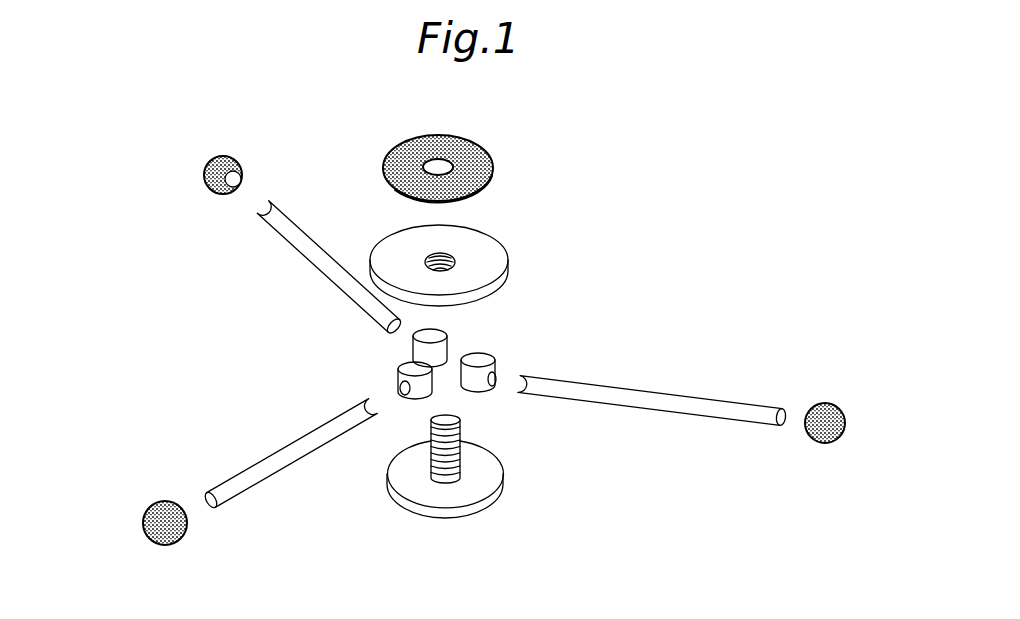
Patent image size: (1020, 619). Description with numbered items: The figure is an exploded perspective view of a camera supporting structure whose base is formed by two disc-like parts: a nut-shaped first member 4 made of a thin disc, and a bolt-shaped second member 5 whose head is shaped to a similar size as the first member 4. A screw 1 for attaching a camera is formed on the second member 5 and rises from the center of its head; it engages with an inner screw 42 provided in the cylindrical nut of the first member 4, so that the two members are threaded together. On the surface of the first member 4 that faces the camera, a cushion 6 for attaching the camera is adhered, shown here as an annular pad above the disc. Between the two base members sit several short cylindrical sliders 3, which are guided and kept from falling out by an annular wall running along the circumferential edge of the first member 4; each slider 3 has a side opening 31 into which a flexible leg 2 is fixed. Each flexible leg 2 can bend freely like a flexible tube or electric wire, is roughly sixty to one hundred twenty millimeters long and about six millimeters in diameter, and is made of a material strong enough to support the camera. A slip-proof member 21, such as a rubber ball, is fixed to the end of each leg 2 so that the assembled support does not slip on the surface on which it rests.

The screw 1 is at (452, 423).
The flexible leg 2 is at (302, 253).
The slip-proof member 21 is at (203, 182).
The slider 3 is at (413, 348).
The hole 31 is at (403, 388).
The first member 4 is at (544, 253).
The inner screw 42 is at (455, 262).
The second member 5 is at (480, 488).
The cushion 6 is at (487, 147).